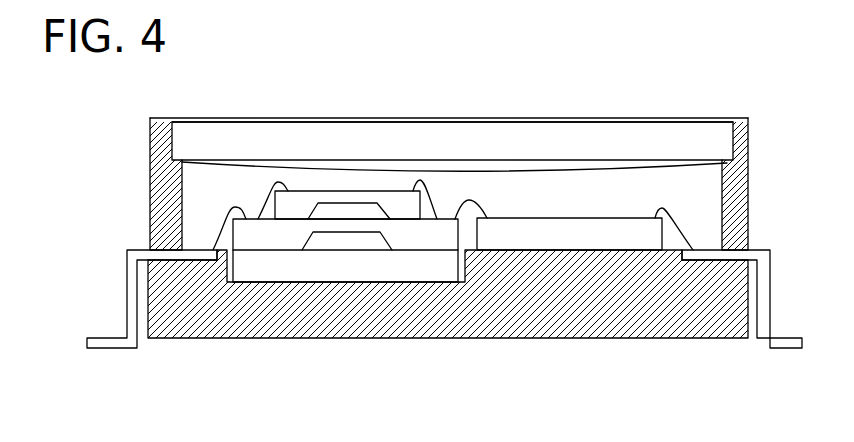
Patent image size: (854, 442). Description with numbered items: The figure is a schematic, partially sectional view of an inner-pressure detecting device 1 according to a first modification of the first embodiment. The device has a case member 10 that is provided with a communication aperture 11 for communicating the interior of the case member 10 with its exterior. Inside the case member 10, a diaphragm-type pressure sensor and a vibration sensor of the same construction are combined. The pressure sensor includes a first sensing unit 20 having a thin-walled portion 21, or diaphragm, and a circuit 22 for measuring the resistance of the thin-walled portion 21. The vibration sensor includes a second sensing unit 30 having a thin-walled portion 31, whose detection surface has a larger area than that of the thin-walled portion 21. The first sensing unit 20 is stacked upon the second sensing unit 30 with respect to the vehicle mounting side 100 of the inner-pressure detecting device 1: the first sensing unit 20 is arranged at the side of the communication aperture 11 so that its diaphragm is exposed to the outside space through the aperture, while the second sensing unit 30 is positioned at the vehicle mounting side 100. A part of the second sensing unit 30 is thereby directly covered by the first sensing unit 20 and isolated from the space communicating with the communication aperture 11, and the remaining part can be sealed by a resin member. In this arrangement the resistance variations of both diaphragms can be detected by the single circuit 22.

The inner-pressure detecting device 1 is at (550, 108).
The case member 10 is at (747, 203).
The communication aperture 11 is at (497, 148).
The first sensing unit 20 is at (405, 197).
The thin-walled portion 21 is at (337, 197).
The circuit 22 is at (567, 230).
The second sensing unit 30 is at (265, 233).
The thin-walled portion 31 is at (346, 228).
The vehicle mounting side 100 is at (512, 338).